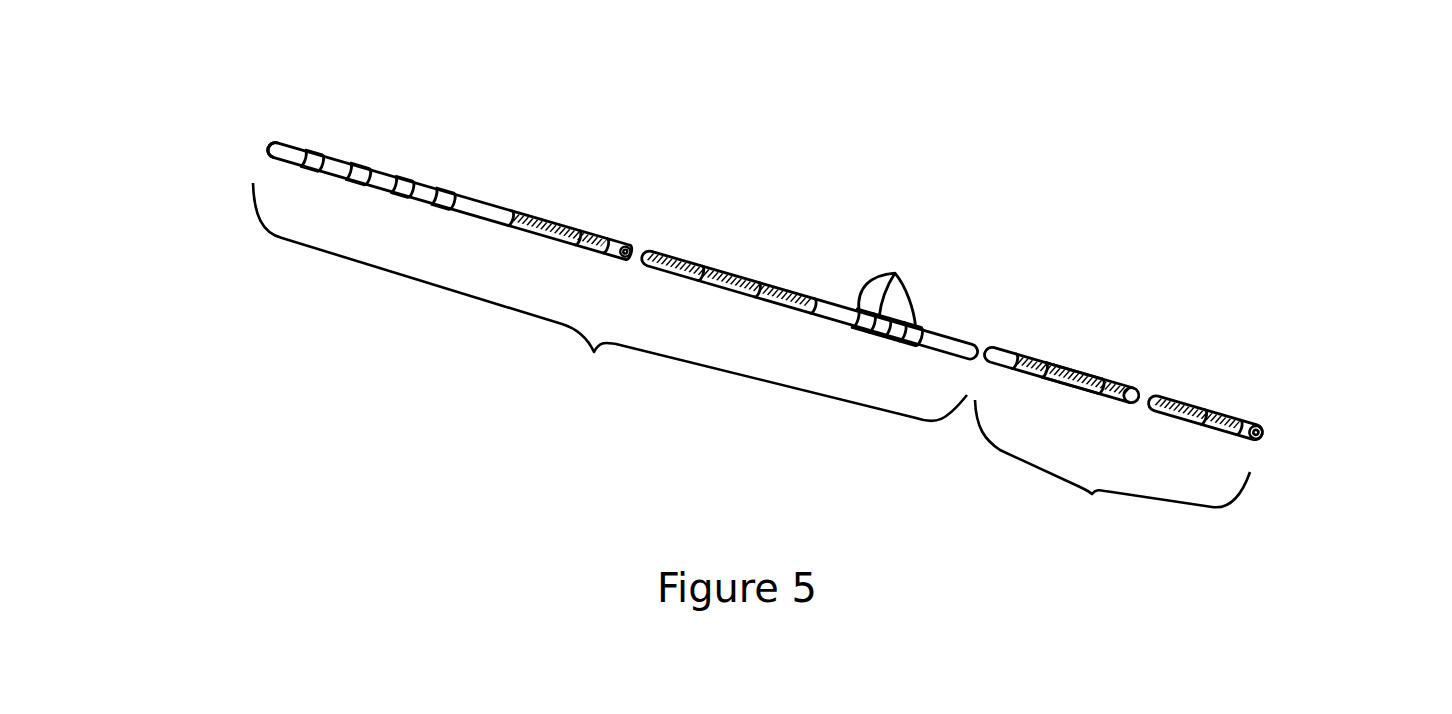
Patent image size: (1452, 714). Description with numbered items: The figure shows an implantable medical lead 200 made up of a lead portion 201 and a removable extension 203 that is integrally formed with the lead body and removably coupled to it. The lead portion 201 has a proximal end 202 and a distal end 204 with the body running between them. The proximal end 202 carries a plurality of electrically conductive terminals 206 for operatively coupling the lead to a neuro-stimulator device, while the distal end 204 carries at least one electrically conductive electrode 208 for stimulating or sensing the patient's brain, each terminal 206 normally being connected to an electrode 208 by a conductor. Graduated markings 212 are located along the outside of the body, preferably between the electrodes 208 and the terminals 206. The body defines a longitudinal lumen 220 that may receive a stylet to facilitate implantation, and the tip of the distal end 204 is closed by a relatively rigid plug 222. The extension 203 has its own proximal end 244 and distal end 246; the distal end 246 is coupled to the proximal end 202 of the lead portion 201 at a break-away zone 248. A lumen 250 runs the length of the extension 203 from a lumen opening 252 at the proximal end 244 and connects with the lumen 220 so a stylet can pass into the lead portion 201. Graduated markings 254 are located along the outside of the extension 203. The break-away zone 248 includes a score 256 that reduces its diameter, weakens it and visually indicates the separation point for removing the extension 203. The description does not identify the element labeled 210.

The implantable medical lead 200 is at (682, 133).
The lead portion 201 is at (610, 302).
The proximal end 202 is at (938, 324).
The extension 203 is at (1112, 469).
The distal end 204 is at (281, 138).
The electrically conductive terminals 206 is at (909, 290).
The electrode 208 is at (395, 105).
The first rod segment 210 is at (535, 190).
The markings 212 is at (795, 283).
The longitudinal lumen 220 is at (633, 248).
The plug 222 is at (267, 146).
The proximal end 244 is at (1247, 420).
The distal end 246 is at (1015, 352).
The break-away zone 248 is at (1010, 347).
The lumen 250 is at (1260, 446).
The lumen opening 252 is at (1254, 448).
The markings 254 is at (1083, 377).
The score 256 is at (978, 363).